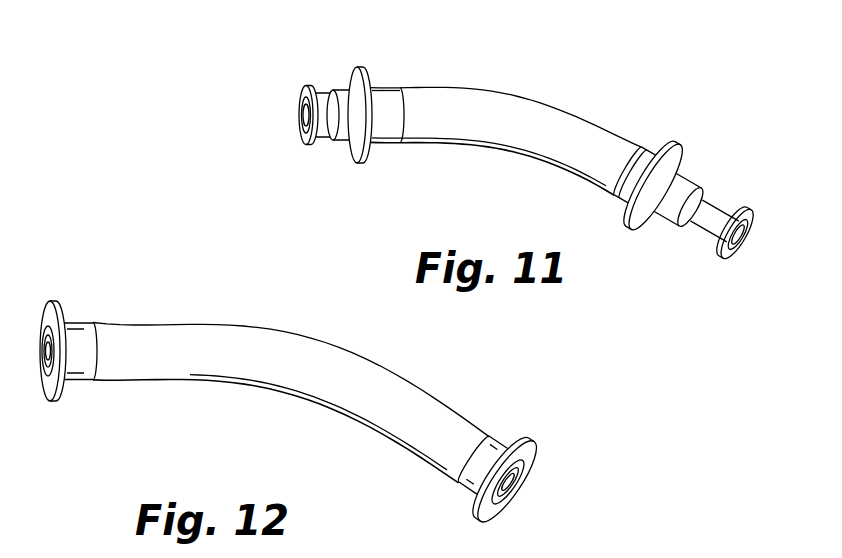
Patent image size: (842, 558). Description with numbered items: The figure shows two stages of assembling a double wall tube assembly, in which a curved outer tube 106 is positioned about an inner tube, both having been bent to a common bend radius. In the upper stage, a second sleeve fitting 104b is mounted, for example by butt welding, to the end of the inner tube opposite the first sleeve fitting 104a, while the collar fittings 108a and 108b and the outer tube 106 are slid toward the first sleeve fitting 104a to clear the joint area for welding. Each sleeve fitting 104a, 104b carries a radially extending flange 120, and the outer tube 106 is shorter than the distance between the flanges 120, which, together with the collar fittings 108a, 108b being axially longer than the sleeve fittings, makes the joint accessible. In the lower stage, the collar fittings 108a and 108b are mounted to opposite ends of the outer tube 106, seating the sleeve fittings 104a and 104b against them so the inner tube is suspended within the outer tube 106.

In FIG. 11, the sleeve fitting 104a is at (298, 87).
In FIG. 12, the sleeve fitting 104a is at (43, 375).
In FIG. 11, the second sleeve fitting 104b is at (752, 223).
In FIG. 12, the second sleeve fitting 104b is at (504, 502).
In FIG. 11, the outer tube 106 is at (536, 100).
In FIG. 12, the outer tube 106 is at (300, 334).
In FIG. 11, the collar fitting 108a is at (359, 67).
In FIG. 12, the collar fitting 108a is at (53, 302).
In FIG. 11, the second collar fitting 108b is at (679, 142).
In FIG. 12, the second collar fitting 108b is at (536, 438).
In FIG. 11, the radially extending flange 120 is at (298, 142).